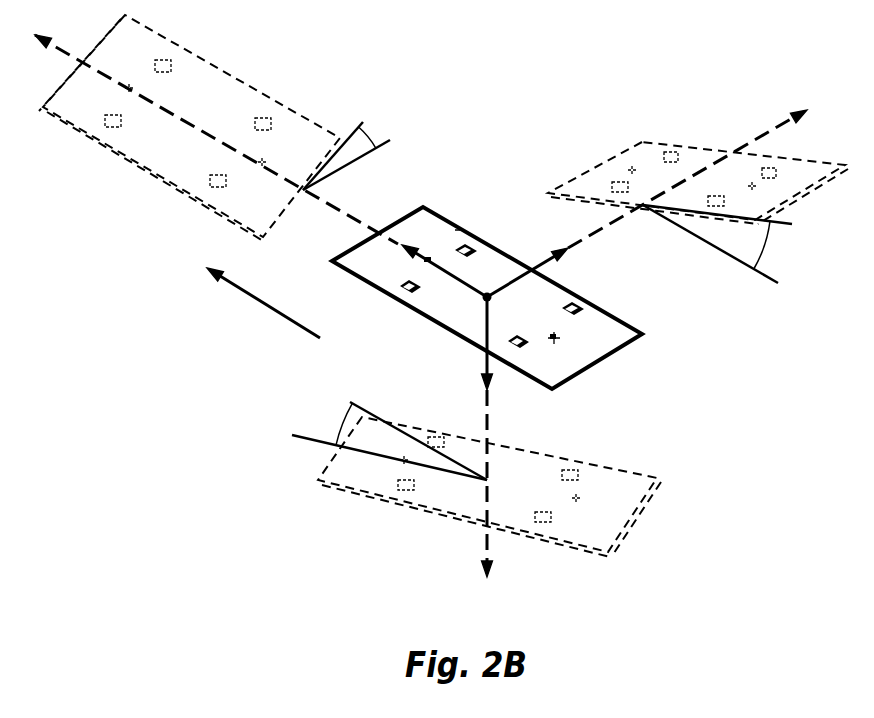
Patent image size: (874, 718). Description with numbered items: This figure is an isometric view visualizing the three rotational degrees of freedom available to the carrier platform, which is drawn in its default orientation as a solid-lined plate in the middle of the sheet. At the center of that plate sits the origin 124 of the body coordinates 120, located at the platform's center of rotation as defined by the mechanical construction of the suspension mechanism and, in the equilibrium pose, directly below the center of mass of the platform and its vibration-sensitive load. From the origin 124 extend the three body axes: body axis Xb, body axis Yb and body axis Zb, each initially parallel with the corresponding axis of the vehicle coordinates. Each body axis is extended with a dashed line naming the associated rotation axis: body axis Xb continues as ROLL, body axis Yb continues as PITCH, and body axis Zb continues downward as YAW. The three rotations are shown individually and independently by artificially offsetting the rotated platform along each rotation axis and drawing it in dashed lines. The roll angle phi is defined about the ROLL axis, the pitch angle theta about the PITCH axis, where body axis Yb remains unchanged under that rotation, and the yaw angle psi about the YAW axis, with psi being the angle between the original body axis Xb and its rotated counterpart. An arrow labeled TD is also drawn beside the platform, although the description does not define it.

The body coordinates 120 is at (489, 255).
The origin 124 is at (498, 297).
The roll rotation axis ROLL is at (332, 206).
The pitch rotation axis PITCH is at (595, 235).
The yaw rotation axis YAW is at (485, 445).
The target direction arrow TD is at (265, 305).
The roll angle phi is at (372, 134).
The pitch angle theta is at (770, 260).
The yaw angle psi is at (333, 423).
The body axis X Xb is at (433, 268).
The body axis Y Yb is at (504, 280).
The body axis Z Zb is at (490, 332).